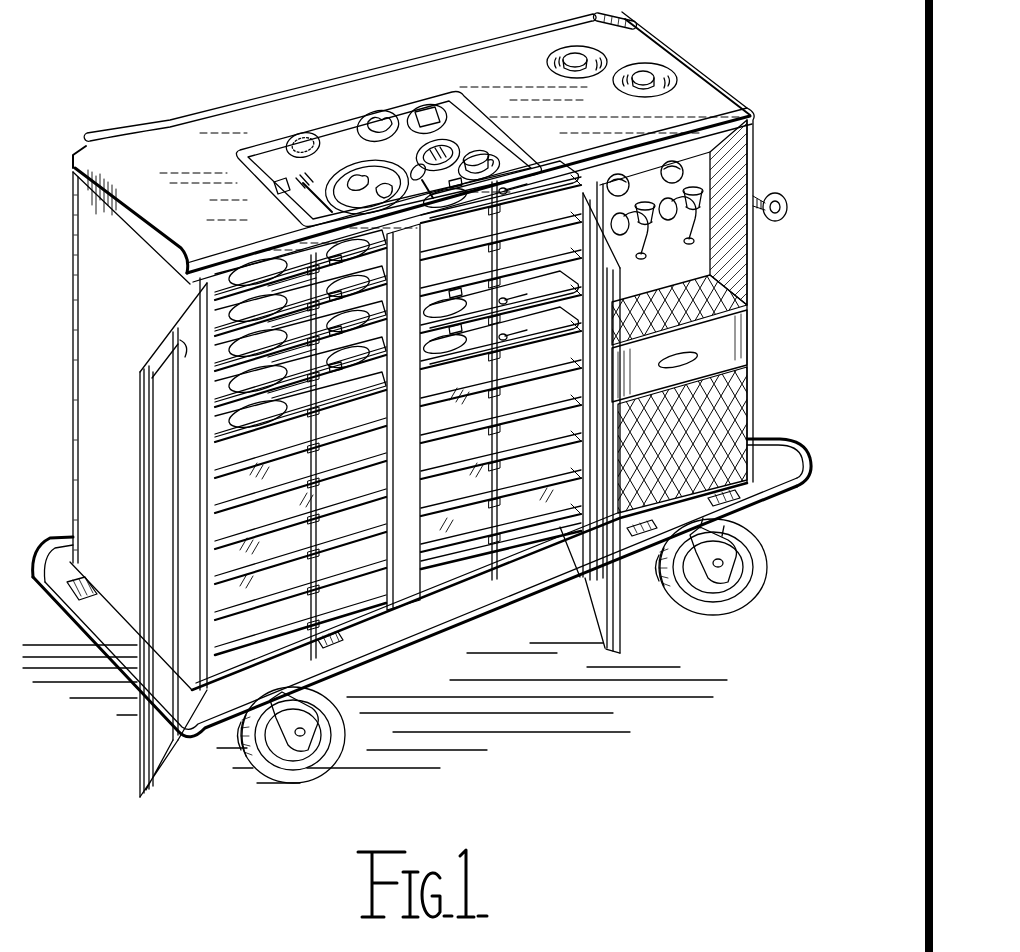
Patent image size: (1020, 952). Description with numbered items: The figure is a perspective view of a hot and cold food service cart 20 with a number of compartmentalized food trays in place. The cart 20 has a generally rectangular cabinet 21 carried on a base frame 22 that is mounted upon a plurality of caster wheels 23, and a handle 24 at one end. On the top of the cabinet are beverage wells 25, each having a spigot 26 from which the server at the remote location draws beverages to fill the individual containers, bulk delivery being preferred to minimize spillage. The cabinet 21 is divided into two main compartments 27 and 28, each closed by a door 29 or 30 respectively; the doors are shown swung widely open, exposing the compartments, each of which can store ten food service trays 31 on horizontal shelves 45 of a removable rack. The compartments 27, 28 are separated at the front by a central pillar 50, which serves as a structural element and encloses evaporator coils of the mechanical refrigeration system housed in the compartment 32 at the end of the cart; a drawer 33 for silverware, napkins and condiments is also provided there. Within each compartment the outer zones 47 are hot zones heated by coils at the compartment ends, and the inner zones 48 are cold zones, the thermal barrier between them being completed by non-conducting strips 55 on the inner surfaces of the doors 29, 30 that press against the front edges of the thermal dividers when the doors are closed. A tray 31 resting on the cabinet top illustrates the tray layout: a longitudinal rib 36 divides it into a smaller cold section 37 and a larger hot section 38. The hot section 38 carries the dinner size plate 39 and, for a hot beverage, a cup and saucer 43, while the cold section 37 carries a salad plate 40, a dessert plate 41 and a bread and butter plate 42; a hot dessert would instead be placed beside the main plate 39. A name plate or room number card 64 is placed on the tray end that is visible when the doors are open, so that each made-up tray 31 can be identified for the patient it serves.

The food service cart 20 is at (762, 374).
The cabinet 21 is at (71, 285).
The base frame 22 is at (522, 603).
The caster wheels 23 is at (717, 610).
The handle 24 is at (776, 196).
The beverage wells 25 is at (603, 60).
The spigot 26 is at (645, 242).
The main compartment 27 is at (376, 640).
The main compartment 28 is at (563, 572).
The door 29 is at (140, 735).
The door 30 is at (620, 614).
The food service tray 31 is at (510, 153).
The refrigeration compartment 32 is at (736, 427).
The drawer 33 is at (750, 337).
The tray rib 36 is at (445, 145).
The cold section 37 is at (373, 140).
The hot section 38 is at (312, 220).
The dinner plate 39 is at (325, 200).
The salad plate 40 is at (388, 118).
The dessert plate 41 is at (302, 140).
The bread and butter plate 42 is at (430, 108).
The cup and saucer 43 is at (500, 163).
The shelves 45 is at (548, 405).
The outer hot zones 47 is at (562, 528).
The inner cold zones 48 is at (467, 563).
The front central pillar 50 is at (422, 508).
The non-conducting strips 55 is at (193, 338).
The name plate or room number card 64 is at (258, 186).